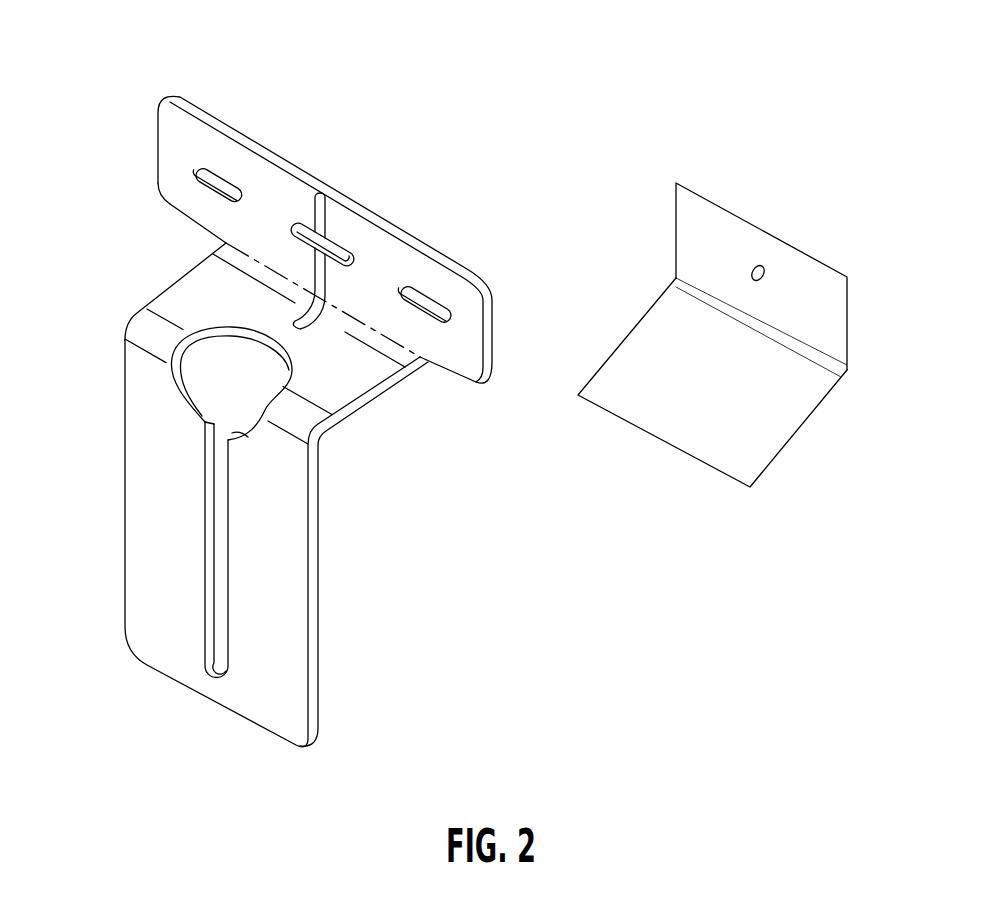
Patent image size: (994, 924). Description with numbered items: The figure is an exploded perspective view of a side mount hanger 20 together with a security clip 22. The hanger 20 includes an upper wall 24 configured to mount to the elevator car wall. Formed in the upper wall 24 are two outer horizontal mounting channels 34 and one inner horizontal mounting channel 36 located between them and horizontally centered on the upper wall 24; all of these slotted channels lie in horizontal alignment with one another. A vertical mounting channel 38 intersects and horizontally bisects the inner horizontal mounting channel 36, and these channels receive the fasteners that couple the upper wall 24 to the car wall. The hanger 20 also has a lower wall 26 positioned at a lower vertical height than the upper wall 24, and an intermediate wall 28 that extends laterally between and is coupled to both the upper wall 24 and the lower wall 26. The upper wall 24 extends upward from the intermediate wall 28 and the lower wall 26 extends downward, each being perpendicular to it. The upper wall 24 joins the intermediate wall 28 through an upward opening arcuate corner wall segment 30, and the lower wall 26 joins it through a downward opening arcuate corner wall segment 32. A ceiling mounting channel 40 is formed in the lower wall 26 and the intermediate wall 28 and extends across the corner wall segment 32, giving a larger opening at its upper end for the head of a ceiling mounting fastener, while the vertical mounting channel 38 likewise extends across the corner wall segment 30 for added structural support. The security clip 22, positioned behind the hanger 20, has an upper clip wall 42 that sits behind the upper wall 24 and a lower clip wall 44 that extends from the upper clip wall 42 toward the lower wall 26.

The hanger 20 is at (127, 82).
The security clip 22 is at (658, 228).
The upper wall 24 is at (157, 172).
The lower wall 26 is at (122, 478).
The intermediate wall 28 is at (170, 287).
The corner wall segment 30 is at (225, 253).
The corner wall segment 32 is at (128, 317).
The outer horizontal mounting channels 34 is at (207, 165).
The inner horizontal mounting channel 36 is at (343, 236).
The vertical mounting channel 38 is at (319, 195).
The ceiling mounting channel 40 is at (228, 542).
The upper clip wall 42 is at (850, 323).
The lower clip wall 44 is at (800, 432).